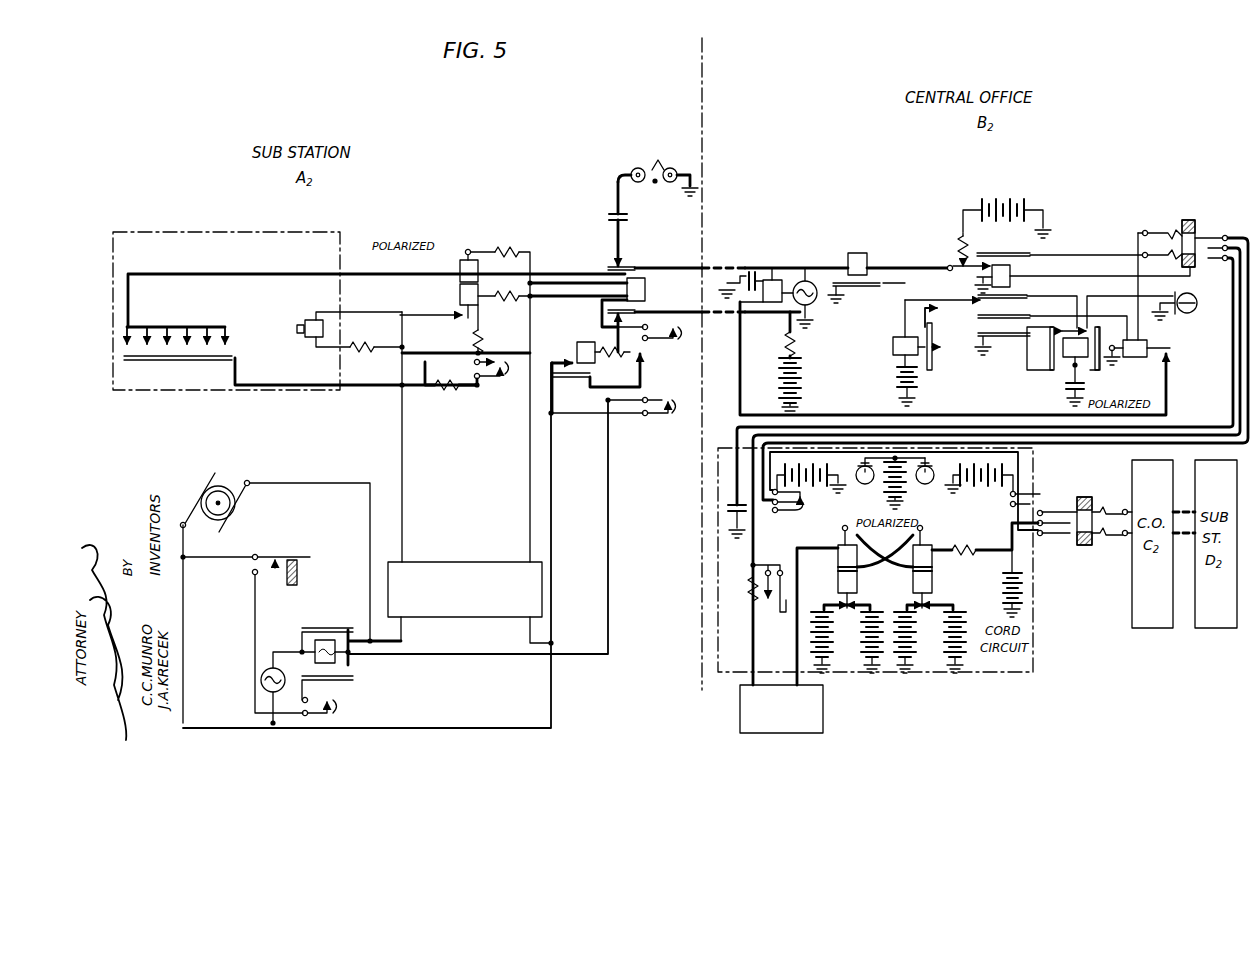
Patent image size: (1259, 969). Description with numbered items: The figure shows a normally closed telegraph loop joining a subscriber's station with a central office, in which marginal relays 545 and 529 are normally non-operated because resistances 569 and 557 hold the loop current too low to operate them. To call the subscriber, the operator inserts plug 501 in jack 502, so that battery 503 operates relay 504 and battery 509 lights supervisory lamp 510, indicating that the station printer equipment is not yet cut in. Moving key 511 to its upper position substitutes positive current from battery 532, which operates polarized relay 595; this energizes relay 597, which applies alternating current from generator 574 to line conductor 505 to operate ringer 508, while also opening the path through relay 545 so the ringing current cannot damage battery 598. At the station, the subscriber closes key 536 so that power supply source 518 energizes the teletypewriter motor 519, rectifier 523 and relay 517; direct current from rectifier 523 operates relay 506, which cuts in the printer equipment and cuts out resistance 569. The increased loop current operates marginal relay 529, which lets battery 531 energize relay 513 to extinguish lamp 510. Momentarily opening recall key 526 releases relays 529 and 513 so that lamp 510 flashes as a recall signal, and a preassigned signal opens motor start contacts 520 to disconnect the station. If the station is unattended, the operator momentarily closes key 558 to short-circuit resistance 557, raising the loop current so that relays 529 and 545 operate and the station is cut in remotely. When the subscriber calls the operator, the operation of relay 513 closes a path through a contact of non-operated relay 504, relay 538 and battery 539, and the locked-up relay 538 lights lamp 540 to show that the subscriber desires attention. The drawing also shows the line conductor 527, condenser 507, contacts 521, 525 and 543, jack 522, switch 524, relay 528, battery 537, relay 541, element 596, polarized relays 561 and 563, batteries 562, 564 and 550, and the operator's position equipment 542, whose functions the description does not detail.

The plug 501 is at (1222, 236).
The jack 502 is at (1190, 214).
The battery 503 is at (731, 540).
The relay 504 is at (1000, 265).
The line conductor 505 is at (718, 266).
The relay 506 is at (640, 279).
The condenser 507 is at (642, 219).
The ringer 508 is at (640, 168).
The battery 509 is at (915, 484).
The supervisory lamp 510 is at (863, 484).
The key 511 is at (800, 502).
The relay 513 is at (892, 346).
The relay 517 is at (329, 640).
The power supply source 518 is at (273, 668).
The teletypewriter motor 519 is at (233, 483).
The motor start contacts 520 is at (310, 557).
The contacts 521 is at (346, 704).
The jack 522 is at (299, 578).
The rectifier 523 is at (495, 608).
The selector switch 524 is at (207, 322).
The contacts 525 is at (508, 388).
The recall key 526 is at (650, 337).
The line conductor 527 is at (721, 315).
The polarized relay 528 is at (462, 270).
The marginal relay 529 is at (857, 253).
The battery 531 is at (896, 378).
The battery 532 is at (808, 484).
The key 536 is at (670, 413).
The battery 537 is at (1003, 200).
The relay 538 is at (1068, 358).
The battery 539 is at (1067, 392).
The lamp 540 is at (1187, 313).
The relay 541 is at (307, 320).
The operator's position equipment 542 is at (823, 726).
The resistance 543 is at (452, 390).
The marginal relay 545 is at (583, 366).
The battery 550 is at (967, 655).
The resistance 557 is at (752, 596).
The key 558 is at (775, 614).
The polarized relay 561 is at (838, 563).
The battery 562 is at (857, 655).
The polarized relay 563 is at (932, 586).
The battery 564 is at (920, 655).
The resistance 569 is at (613, 356).
The generator 574 is at (813, 302).
The polarized relay 595 is at (1135, 358).
The condenser 596 is at (738, 276).
The relay 597 is at (769, 279).
The battery 598 is at (779, 376).